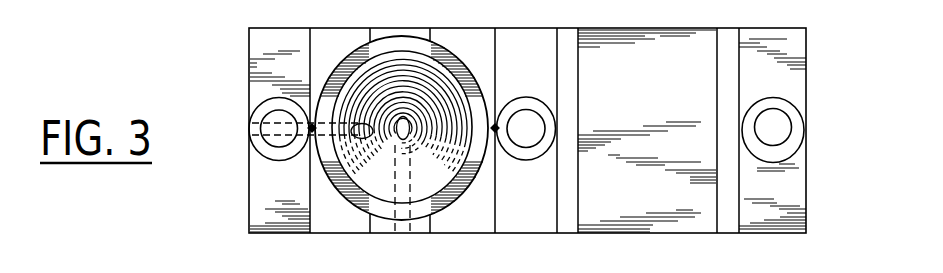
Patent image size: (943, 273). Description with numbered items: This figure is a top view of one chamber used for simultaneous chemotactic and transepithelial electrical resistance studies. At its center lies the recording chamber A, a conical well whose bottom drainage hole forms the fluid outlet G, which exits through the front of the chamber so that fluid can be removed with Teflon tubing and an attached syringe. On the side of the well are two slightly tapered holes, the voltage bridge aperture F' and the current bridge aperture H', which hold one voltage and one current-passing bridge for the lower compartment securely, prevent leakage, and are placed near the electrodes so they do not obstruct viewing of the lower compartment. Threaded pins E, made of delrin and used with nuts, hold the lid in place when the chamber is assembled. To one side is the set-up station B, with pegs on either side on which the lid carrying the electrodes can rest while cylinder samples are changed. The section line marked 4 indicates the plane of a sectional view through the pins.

The recording chamber A is at (447, 88).
The set-up station B is at (658, 105).
The threaded pins E is at (265, 115).
The voltage bridge aperture F' is at (340, 82).
The current bridge aperture H' is at (368, 154).
The fluid outlet G is at (403, 226).
The section line 4- 4 is at (197, 131).